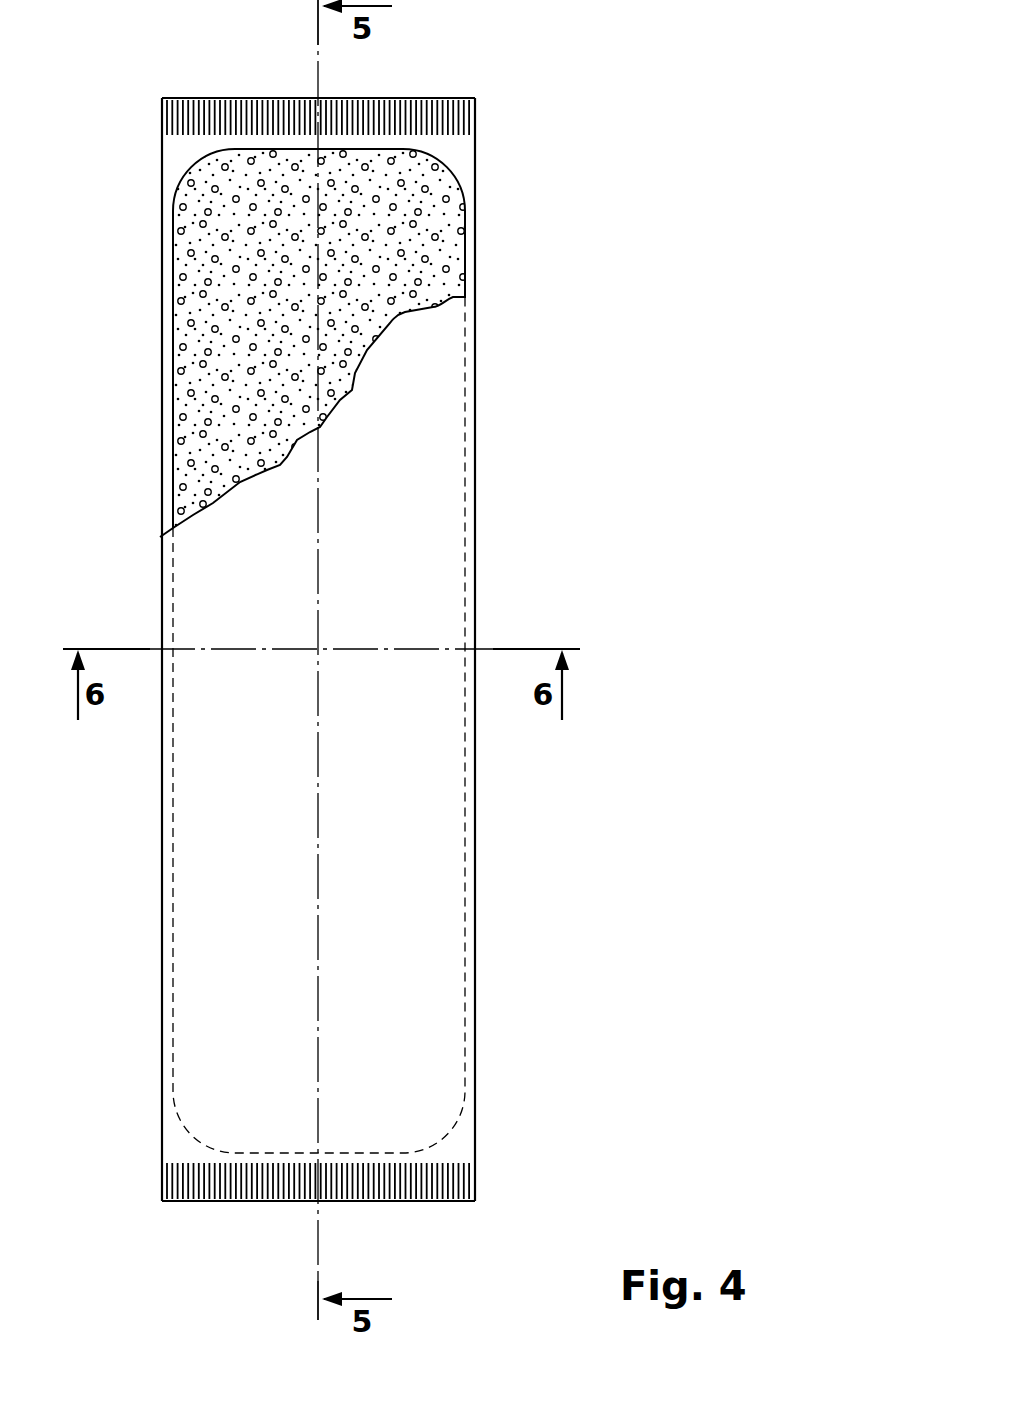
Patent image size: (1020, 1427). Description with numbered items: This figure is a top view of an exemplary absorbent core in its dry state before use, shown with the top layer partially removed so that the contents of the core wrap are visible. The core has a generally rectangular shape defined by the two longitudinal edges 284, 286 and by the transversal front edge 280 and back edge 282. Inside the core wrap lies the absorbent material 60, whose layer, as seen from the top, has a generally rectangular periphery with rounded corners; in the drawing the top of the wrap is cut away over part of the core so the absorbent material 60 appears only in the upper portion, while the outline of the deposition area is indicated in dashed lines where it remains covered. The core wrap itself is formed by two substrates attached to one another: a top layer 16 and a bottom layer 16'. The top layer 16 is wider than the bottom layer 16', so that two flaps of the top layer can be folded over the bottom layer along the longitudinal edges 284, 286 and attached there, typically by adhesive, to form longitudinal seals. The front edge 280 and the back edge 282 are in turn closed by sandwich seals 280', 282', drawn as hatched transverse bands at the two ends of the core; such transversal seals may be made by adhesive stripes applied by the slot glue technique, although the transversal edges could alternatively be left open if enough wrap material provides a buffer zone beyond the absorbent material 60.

The back edge 282 is at (380, 66).
The sandwich seal 282' is at (379, 117).
The bottom layer 16' is at (381, 338).
The absorbent material 60 is at (197, 328).
The longitudinal edge 286 is at (476, 507).
The longitudinal edge 284 is at (162, 897).
The top layer 16 is at (368, 725).
The front edge 280 is at (292, 1237).
The sandwich seal 280' is at (378, 1181).